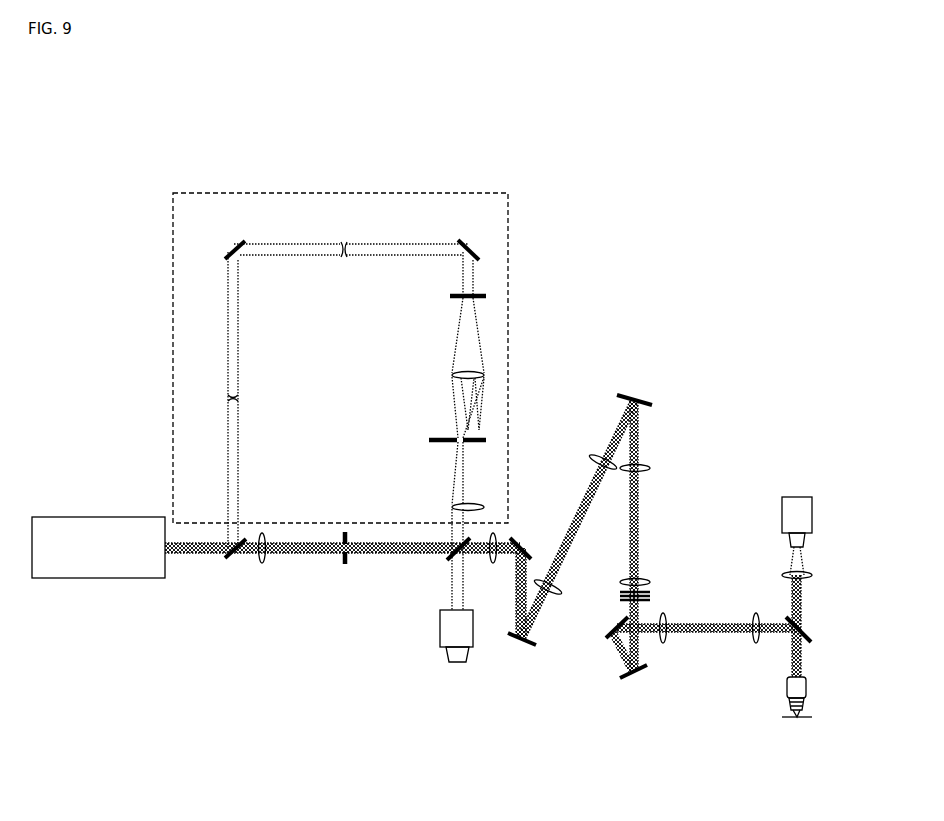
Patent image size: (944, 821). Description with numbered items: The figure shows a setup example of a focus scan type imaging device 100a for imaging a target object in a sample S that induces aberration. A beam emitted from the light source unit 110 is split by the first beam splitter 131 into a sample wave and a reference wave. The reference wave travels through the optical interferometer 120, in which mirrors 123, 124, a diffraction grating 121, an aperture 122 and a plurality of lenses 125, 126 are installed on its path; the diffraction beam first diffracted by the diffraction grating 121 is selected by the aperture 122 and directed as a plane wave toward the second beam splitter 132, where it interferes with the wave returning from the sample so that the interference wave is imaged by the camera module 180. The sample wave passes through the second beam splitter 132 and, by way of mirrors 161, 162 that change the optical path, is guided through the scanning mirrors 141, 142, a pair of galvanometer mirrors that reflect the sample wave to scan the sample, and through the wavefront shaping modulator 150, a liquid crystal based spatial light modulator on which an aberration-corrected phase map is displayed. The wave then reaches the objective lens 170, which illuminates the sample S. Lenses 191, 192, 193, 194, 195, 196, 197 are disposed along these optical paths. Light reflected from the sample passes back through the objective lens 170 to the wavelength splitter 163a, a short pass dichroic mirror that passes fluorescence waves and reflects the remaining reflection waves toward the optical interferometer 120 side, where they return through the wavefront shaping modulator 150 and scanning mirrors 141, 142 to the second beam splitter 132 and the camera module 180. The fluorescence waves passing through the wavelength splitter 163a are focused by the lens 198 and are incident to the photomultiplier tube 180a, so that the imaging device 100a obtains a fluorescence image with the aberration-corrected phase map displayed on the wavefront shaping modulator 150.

The imaging device 100a is at (563, 150).
The light source unit 110 is at (105, 517).
The optical interferometer 120 is at (341, 193).
The diffraction grating 121 is at (450, 296).
The aperture 122 is at (429, 440).
The mirror 123 is at (235, 242).
The mirror 124 is at (468, 242).
The lens 125 is at (452, 375).
The lens 126 is at (452, 507).
The first beam splitter 131 is at (232, 560).
The second beam splitter 132 is at (450, 560).
The scanning mirror 141 is at (530, 648).
The scanning mirror 142 is at (635, 395).
The wavefront shaping modulator 150 is at (633, 680).
The mirror 161 is at (528, 538).
The mirror 162 is at (610, 630).
The wavelength splitter 163a is at (812, 631).
The objective lens 170 is at (806, 688).
The camera module 180 is at (458, 663).
The photomultiplier tube 180a is at (812, 515).
The lens 191 is at (262, 565).
The lens 192 is at (493, 565).
The lens 193 is at (563, 589).
The lens 194 is at (590, 462).
The lens 195 is at (650, 468).
The lens 196 is at (663, 645).
The lens 197 is at (756, 645).
The lens 198 is at (812, 575).
The sample S is at (797, 720).